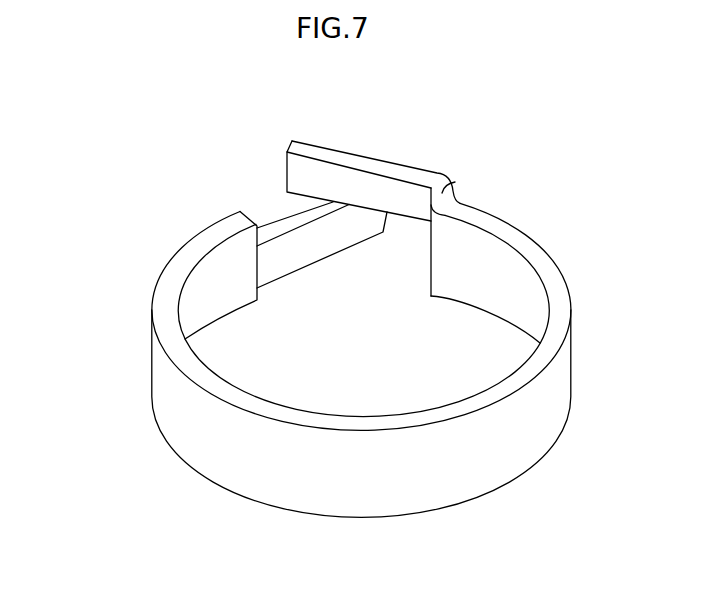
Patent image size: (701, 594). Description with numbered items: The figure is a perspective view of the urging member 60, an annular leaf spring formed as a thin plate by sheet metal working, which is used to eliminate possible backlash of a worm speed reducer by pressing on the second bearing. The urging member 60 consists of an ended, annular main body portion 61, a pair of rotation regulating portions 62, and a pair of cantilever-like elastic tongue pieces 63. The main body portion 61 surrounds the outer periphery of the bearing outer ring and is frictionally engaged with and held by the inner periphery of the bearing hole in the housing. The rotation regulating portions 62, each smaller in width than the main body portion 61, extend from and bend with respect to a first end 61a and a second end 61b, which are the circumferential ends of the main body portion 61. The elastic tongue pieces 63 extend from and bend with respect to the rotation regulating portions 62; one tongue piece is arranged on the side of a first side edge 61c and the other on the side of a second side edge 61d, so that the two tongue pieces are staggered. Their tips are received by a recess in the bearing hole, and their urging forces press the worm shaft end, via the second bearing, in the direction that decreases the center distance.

The urging member 60 is at (379, 190).
The main body portion 61 is at (316, 374).
The first end 61a is at (471, 271).
The second end 61b is at (207, 284).
The first side edge 61c is at (163, 305).
The second side edge 61d is at (484, 312).
The rotation regulating portion 62 is at (458, 181).
The elastic tongue piece 63 is at (400, 168).